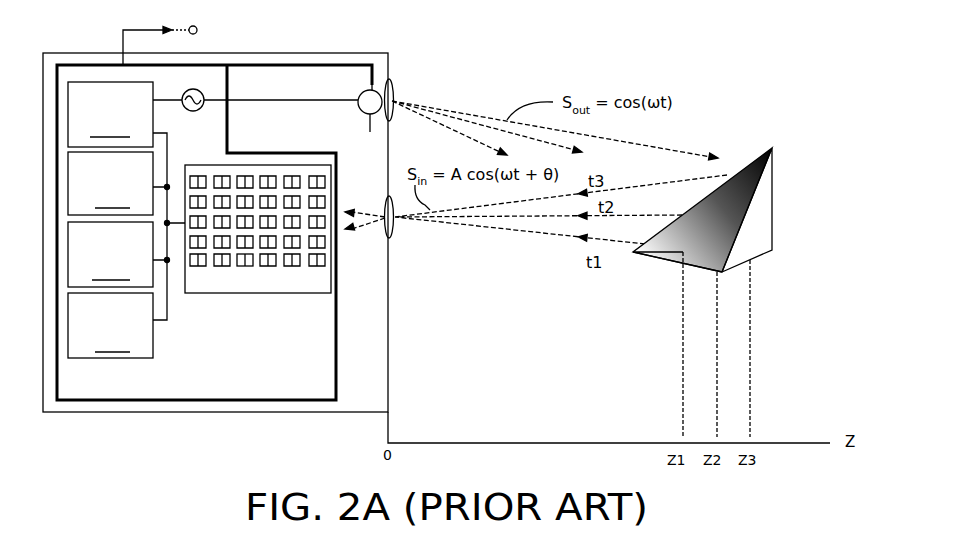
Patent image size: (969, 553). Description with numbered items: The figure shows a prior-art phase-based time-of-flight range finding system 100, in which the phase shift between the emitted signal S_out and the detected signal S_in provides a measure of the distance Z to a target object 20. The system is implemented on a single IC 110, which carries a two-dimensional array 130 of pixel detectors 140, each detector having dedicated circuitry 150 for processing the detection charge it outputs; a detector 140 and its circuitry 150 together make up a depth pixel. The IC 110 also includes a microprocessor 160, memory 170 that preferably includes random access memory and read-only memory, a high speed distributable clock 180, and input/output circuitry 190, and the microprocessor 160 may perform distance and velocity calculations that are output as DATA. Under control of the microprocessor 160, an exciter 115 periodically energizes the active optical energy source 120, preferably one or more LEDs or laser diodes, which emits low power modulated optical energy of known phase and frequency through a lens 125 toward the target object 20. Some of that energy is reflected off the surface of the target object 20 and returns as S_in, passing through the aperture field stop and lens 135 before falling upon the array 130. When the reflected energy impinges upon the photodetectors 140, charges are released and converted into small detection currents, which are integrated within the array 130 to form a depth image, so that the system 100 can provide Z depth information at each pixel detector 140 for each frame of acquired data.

The TOF system 100 is at (85, 35).
The IC 110 is at (322, 150).
The exciter 115 is at (188, 92).
The active optical energy source 120 is at (358, 92).
The lens 125 is at (397, 90).
The two-dimensional array 130 is at (202, 163).
The aperture field stop and lens 135 is at (403, 232).
The pixel detector 140 is at (250, 267).
The dedicated circuitry 150 is at (242, 267).
The microprocessor 160 is at (110, 183).
The memory 170 is at (110, 325).
The clock 180 is at (110, 254).
The input/output (I/O) circuitry 190 is at (110, 114).
The target object 20 is at (787, 167).